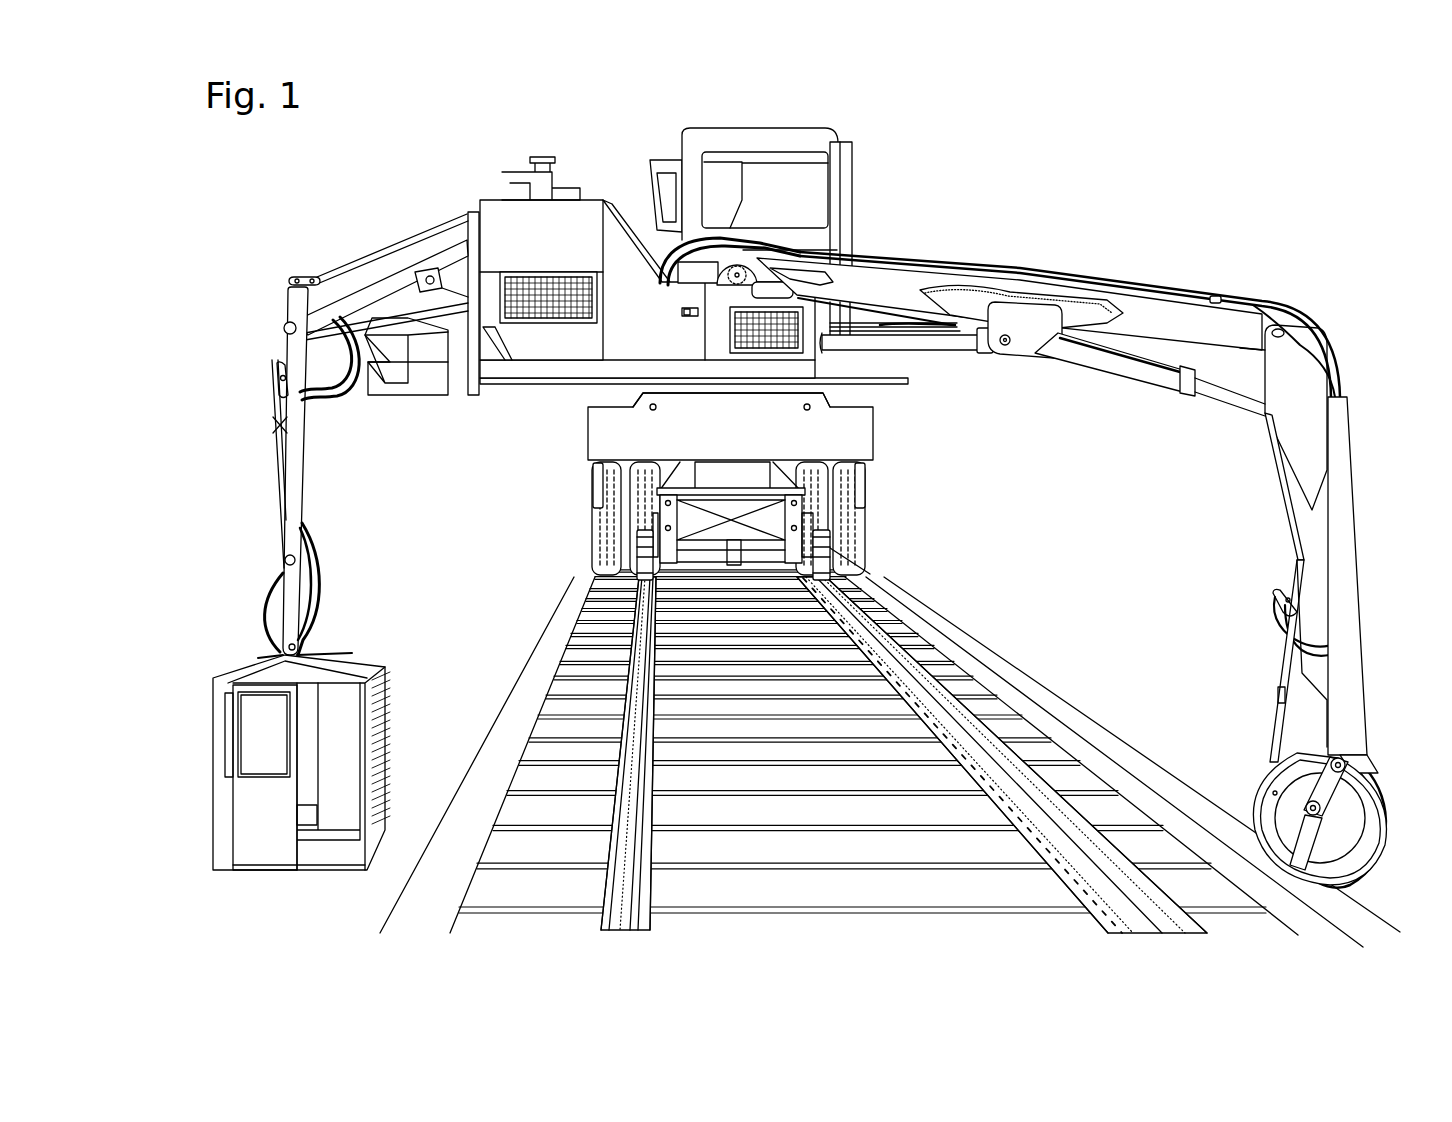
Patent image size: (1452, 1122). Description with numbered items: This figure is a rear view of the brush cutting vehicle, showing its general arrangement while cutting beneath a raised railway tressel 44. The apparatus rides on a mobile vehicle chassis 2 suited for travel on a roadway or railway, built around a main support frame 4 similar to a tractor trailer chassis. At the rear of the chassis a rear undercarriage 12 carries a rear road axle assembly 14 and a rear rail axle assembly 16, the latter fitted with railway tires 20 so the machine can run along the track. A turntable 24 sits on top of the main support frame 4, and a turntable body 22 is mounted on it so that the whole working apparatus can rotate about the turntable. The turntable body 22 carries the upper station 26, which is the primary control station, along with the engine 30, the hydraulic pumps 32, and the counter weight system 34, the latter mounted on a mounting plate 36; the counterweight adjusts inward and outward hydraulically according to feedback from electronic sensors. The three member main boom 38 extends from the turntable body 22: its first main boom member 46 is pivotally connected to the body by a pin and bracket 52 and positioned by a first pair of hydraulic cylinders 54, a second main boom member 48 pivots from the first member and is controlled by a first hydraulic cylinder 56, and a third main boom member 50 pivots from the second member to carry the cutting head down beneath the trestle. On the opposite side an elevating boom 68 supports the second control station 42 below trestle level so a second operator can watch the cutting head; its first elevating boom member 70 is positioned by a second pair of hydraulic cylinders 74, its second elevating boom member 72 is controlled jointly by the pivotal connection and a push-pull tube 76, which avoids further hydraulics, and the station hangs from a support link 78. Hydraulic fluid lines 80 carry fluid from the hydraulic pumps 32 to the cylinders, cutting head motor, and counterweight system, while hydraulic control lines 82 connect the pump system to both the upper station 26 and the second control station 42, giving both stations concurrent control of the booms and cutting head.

The mobile vehicle chassis 2 is at (875, 437).
The main support frame 4 is at (825, 403).
The rear undercarriage 12 is at (697, 527).
The rear road axle assembly 14 is at (880, 516).
The rear rail axle assembly 16 is at (870, 574).
The railway tires 20 is at (640, 553).
The turntable body 22 is at (835, 352).
The turntable 24 is at (667, 386).
The upper station 26 is at (782, 134).
The engine 30 is at (590, 288).
The hydraulic pumps 32 is at (738, 331).
The counter weight system 34 is at (400, 380).
The mounting plate 36 is at (478, 345).
The main boom 38 is at (898, 284).
The second control station 42 is at (215, 687).
The railway tressel 44 is at (1055, 690).
The first main boom member 46 is at (1183, 318).
The second main boom member 48 is at (1345, 537).
The third main boom member 50 is at (1305, 848).
The pin and bracket 52 is at (733, 275).
The first pair of hydraulic cylinders 54 is at (960, 345).
The first hydraulic cylinder 56 is at (1140, 378).
The elevating boom 68 is at (402, 252).
The first elevating boom member 70 is at (370, 285).
The second elevating boom member 72 is at (300, 467).
The second pair of hydraulic cylinders 74 is at (425, 283).
The push-pull tube 76 is at (325, 273).
The support link 78 is at (290, 615).
The hydraulic fluid lines 80 is at (1300, 318).
The hydraulic control lines 82 is at (312, 538).